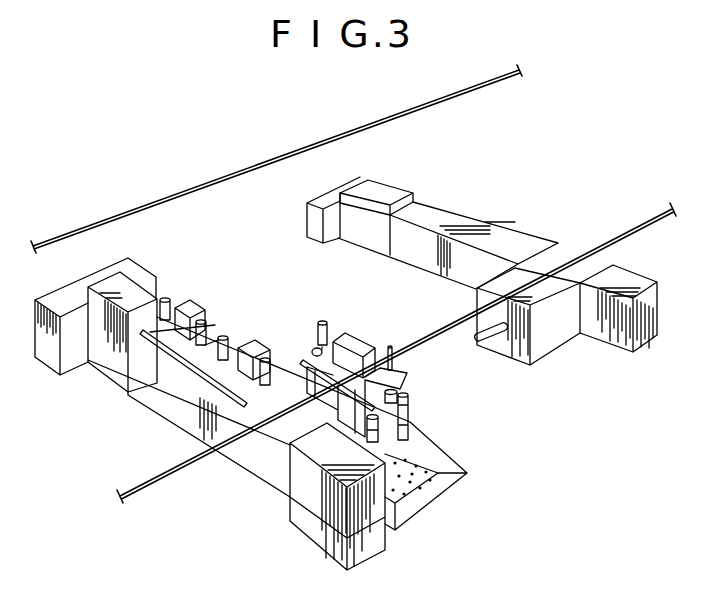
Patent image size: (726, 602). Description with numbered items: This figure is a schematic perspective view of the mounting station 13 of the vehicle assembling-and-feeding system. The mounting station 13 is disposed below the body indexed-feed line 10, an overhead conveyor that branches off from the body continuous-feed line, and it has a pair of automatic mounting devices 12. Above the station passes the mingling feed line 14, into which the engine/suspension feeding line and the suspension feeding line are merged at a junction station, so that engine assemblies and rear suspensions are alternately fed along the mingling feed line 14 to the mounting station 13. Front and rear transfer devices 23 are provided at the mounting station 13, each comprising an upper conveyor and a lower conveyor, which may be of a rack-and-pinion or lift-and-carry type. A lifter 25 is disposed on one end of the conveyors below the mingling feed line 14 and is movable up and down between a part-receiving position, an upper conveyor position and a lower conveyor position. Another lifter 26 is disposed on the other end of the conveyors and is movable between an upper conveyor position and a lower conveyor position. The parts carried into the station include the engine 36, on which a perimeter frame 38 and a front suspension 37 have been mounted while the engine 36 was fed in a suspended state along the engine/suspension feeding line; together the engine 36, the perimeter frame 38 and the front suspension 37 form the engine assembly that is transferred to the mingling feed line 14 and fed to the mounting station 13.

The body indexed-feed line 10 is at (618, 230).
The automatic mounting device 12 is at (553, 340).
The mounting station 13 is at (575, 165).
The mingling feed line 14 is at (213, 177).
The transfer device 23 is at (471, 220).
The lifter 25 is at (390, 193).
The lifter 26 is at (636, 285).
The engine 36 is at (187, 315).
The front suspension 37 is at (167, 303).
The perimeter frame 38 is at (160, 358).